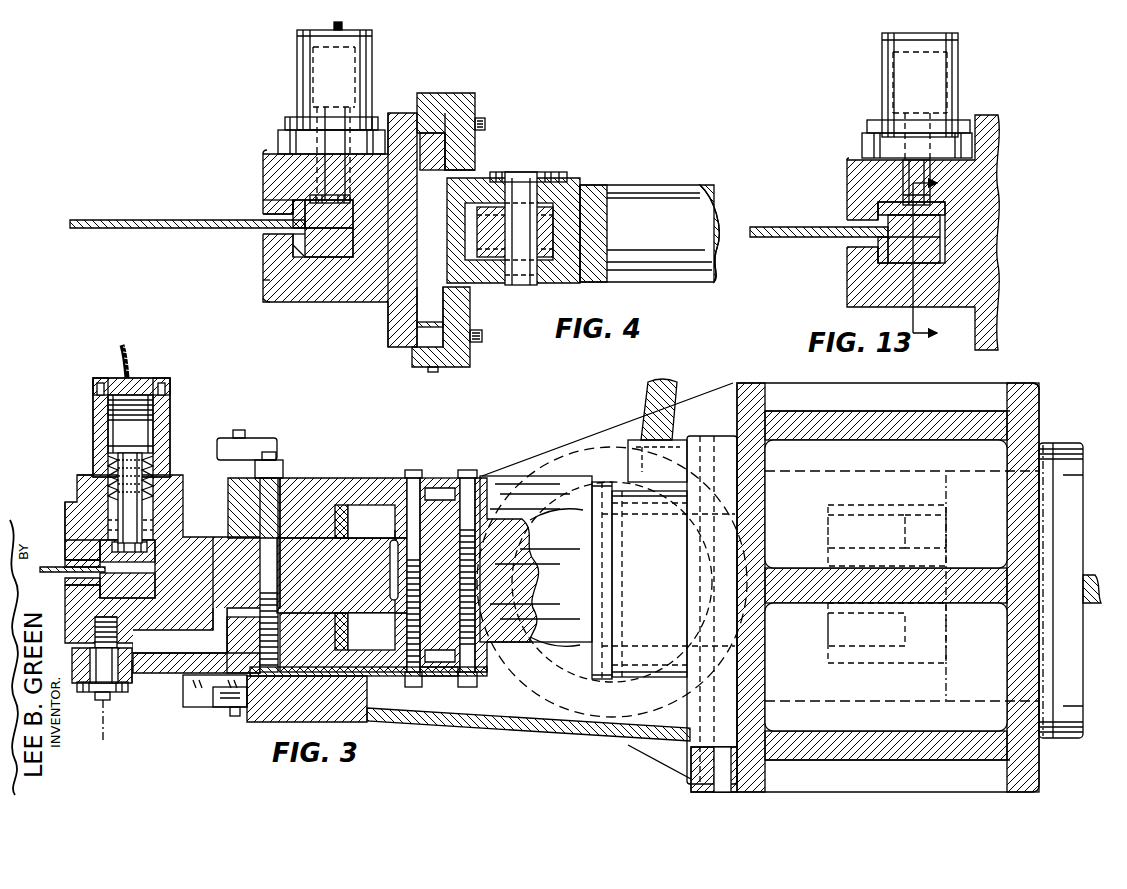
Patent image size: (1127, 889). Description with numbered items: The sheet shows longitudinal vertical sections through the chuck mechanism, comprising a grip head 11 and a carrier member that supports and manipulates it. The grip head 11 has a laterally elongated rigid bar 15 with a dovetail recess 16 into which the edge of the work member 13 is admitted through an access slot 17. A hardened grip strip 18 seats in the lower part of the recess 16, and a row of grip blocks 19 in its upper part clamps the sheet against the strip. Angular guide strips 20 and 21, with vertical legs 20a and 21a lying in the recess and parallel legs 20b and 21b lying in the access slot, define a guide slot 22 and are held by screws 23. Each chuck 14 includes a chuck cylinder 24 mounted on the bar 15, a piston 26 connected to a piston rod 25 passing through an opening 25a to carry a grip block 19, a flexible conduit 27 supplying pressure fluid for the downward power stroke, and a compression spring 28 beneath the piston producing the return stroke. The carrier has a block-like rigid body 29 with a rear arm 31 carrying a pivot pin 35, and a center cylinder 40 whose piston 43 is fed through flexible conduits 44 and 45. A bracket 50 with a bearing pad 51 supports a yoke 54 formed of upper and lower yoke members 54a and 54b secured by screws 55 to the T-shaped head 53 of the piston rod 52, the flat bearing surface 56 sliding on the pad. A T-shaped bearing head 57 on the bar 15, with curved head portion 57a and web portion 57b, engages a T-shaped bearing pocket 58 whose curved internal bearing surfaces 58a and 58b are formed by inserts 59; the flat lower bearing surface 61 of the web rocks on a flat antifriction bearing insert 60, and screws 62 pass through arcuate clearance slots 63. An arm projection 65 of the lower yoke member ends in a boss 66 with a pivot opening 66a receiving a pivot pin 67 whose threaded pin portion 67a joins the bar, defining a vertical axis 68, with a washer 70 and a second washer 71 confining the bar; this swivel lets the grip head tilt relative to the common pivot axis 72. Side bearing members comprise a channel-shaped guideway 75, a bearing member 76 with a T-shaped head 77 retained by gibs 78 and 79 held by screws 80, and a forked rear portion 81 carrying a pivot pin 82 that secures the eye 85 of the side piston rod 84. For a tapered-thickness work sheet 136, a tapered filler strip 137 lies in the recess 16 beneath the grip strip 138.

In FIG. 4, the grip head 11 is at (342, 305).
In FIG. 13, the grip head 11 is at (847, 158).
In FIG. 3, the grip head 11 is at (72, 500).
In FIG. 4, the work member 13 is at (148, 220).
In FIG. 3, the work member 13 is at (65, 569).
In FIG. 4, the work-gripping chuck 14 is at (355, 35).
In FIG. 13, the work-gripping chuck 14 is at (958, 66).
In FIG. 3, the work-gripping chuck 14 is at (148, 380).
In FIG. 4, the rigid bar 15 is at (263, 154).
In FIG. 13, the rigid bar 15 is at (847, 175).
In FIG. 3, the rigid bar 15 is at (65, 497).
In FIG. 4, the dovetail recess 16 is at (350, 197).
In FIG. 13, the dovetail recess 16 is at (930, 210).
In FIG. 3, the dovetail recess 16 is at (147, 545).
In FIG. 4, the access slot 17 is at (293, 210).
In FIG. 4, the grip strip 18 is at (353, 245).
In FIG. 3, the grip strip 18 is at (155, 588).
In FIG. 4, the grip block 19 is at (353, 215).
In FIG. 3, the grip block 19 is at (155, 552).
In FIG. 4, the guide strip 20 is at (262, 214).
In FIG. 3, the guide strip 20 is at (65, 540).
In FIG. 4, the vertical leg 20a is at (262, 200).
In FIG. 4, the parallel leg 20b is at (290, 205).
In FIG. 4, the guide strip 21 is at (262, 236).
In FIG. 3, the guide strip 21 is at (65, 583).
In FIG. 4, the vertical leg 21a is at (262, 300).
In FIG. 4, the parallel leg 21b is at (262, 278).
In FIG. 4, the guide slot 22 is at (268, 252).
In FIG. 3, the guide slot 22 is at (65, 560).
In FIG. 3, the screw 23 is at (65, 512).
In FIG. 4, the chuck cylinder 24 is at (360, 52).
In FIG. 3, the chuck cylinder 24 is at (170, 402).
In FIG. 4, the piston rod 25 is at (350, 182).
In FIG. 3, the piston rod 25 is at (153, 518).
In FIG. 3, the opening 25a is at (153, 530).
In FIG. 4, the piston 26 is at (345, 77).
In FIG. 3, the piston 26 is at (142, 450).
In FIG. 4, the flexible conduit 27 is at (334, 26).
In FIG. 3, the flexible conduit 27 is at (121, 358).
In FIG. 3, the compression spring 28 is at (153, 462).
In FIG. 3, the rigid body 29 is at (947, 383).
In FIG. 3, the rear arm 31 is at (580, 440).
In FIG. 3, the rear pivot pin 35 is at (550, 650).
In FIG. 3, the center cylinder 40 is at (1076, 488).
In FIG. 3, the piston 43 is at (948, 485).
In FIG. 3, the flexible conduit 44 is at (1094, 575).
In FIG. 3, the flexible conduit 45 is at (678, 386).
In FIG. 3, the bracket 50 is at (430, 728).
In FIG. 3, the bearing pad 51 is at (350, 722).
In FIG. 3, the piston rod 52 is at (560, 530).
In FIG. 3, the T-shaped head 53 is at (468, 478).
In FIG. 3, the yoke 54 is at (318, 478).
In FIG. 3, the upper yoke member 54a is at (430, 480).
In FIG. 3, the lower yoke member 54b is at (475, 685).
In FIG. 3, the screw 55 is at (415, 478).
In FIG. 3, the flat bearing surface 56 is at (330, 668).
In FIG. 3, the T-shaped bearing head 57 is at (405, 680).
In FIG. 3, the curved head portion 57a is at (348, 538).
In FIG. 3, the web portion 57b is at (335, 515).
In FIG. 3, the T-shaped bearing pocket 58 is at (360, 478).
In FIG. 3, the curved internal bearing surface 58a is at (371, 514).
In FIG. 3, the curved internal bearing surface 58b is at (390, 580).
In FIG. 3, the insert 59 is at (335, 620).
In FIG. 3, the flat antifriction bearing insert 60 is at (243, 645).
In FIG. 3, the flat lower bearing surface 61 is at (247, 603).
In FIG. 3, the screw 62 is at (282, 462).
In FIG. 3, the arcuate clearance slot 63 is at (295, 575).
In FIG. 3, the arm projection 65 is at (184, 702).
In FIG. 3, the boss 66 is at (80, 692).
In FIG. 3, the pivot opening 66a is at (213, 622).
In FIG. 3, the pivot pin 67 is at (133, 678).
In FIG. 3, the threaded pin portion 67a is at (175, 627).
In FIG. 3, the vertical axis 68 is at (106, 730).
In FIG. 3, the washer 70 is at (117, 633).
In FIG. 3, the second washer 71 is at (120, 690).
In FIG. 3, the common pivot axis 72 is at (1044, 420).
In FIG. 4, the channel-shaped guideway 75 is at (400, 160).
In FIG. 4, the bearing member 76 is at (473, 115).
In FIG. 4, the T-shaped head 77 is at (450, 145).
In FIG. 4, the gib 78 is at (448, 97).
In FIG. 4, the gib 79 is at (465, 364).
In FIG. 4, the screw 80 is at (485, 123).
In FIG. 4, the forked rear portion 81 is at (470, 180).
In FIG. 4, the pivot pin 82 is at (522, 172).
In FIG. 4, the piston rod 84 is at (640, 185).
In FIG. 4, the eye 85 is at (485, 262).
In FIG. 13, the work sheet 136 is at (823, 227).
In FIG. 13, the tapered filler strip 137 is at (925, 250).
In FIG. 13, the grip strip 138 is at (940, 240).